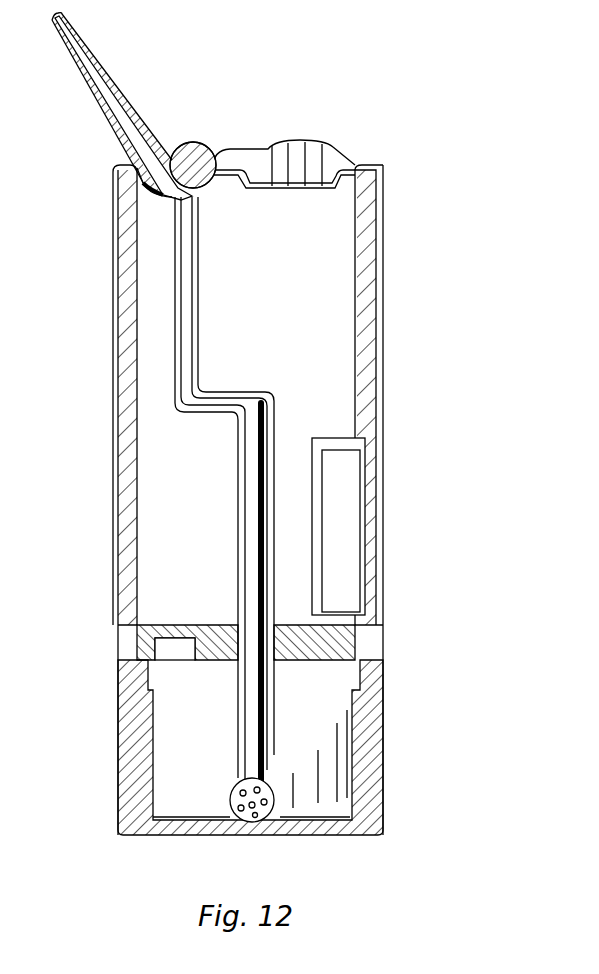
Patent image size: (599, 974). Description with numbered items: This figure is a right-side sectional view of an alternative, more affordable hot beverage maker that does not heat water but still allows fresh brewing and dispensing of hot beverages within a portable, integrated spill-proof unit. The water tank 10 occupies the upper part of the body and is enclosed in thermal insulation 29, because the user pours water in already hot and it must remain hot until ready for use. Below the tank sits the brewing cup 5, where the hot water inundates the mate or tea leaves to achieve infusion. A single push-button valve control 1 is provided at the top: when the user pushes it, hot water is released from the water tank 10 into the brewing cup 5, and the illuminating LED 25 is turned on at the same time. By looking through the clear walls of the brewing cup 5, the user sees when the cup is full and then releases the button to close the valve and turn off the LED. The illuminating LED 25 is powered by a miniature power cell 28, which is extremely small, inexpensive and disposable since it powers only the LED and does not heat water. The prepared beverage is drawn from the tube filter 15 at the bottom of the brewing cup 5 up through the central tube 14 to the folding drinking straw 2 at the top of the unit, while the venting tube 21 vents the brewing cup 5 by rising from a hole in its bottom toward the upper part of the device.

The valve control 1 is at (302, 142).
The folding drinking straw 2 is at (202, 136).
The brewing cup 5 is at (313, 736).
The water tank 10 is at (298, 275).
The central tube 14 is at (252, 755).
The tube filter 15 is at (275, 798).
The venting tube 21 is at (274, 413).
The illuminating LED 25 is at (155, 650).
The miniature power cell 28 is at (350, 522).
The thermal insulation 29 is at (118, 282).